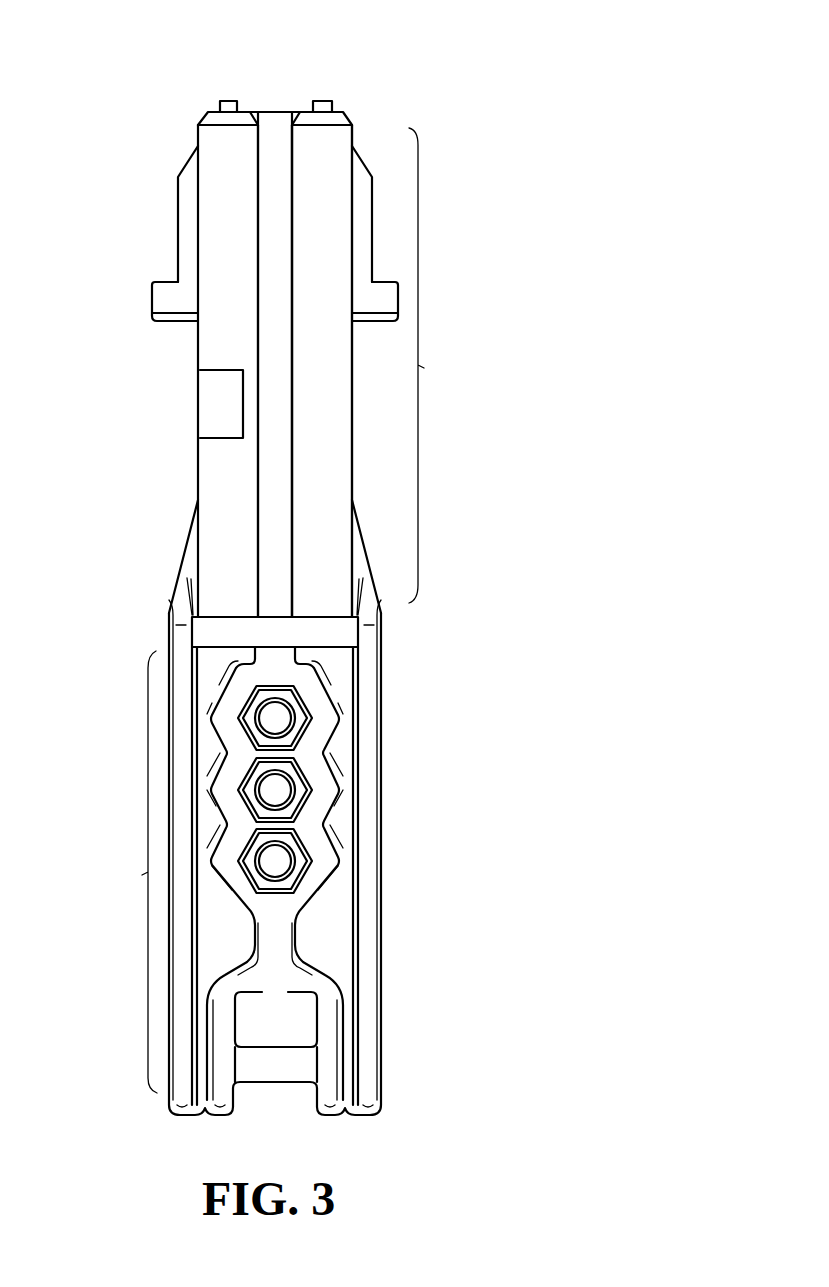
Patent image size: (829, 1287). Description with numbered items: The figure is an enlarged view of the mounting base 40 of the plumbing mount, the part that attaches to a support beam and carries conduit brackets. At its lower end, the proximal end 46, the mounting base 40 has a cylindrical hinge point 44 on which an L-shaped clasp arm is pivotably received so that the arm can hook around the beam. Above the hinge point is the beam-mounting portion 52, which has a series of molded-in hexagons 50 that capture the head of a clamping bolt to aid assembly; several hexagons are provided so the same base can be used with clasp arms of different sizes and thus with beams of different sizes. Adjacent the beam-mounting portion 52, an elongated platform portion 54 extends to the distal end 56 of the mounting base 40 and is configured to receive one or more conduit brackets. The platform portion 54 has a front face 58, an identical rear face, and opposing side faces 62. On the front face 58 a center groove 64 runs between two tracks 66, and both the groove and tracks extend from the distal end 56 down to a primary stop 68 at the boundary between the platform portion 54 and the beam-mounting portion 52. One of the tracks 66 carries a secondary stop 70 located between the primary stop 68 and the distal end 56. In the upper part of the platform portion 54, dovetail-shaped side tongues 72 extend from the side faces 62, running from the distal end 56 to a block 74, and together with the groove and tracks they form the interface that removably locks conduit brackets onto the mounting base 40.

The mounting base 40 is at (381, 660).
The cylindrical hinge point 44 is at (273, 1087).
The proximal end 46 is at (381, 1043).
The molded-in hexagon 50 is at (330, 733).
The beam-mounting portion 52 is at (126, 872).
The platform portion 54 is at (434, 365).
The distal end 56 is at (260, 110).
The front face 58 is at (320, 197).
The side faces 62 is at (170, 403).
The center groove 64 is at (275, 150).
The tracks 66 is at (230, 158).
The primary stop 68 is at (222, 615).
The secondary stop 70 is at (220, 438).
The side tongues 72 is at (177, 210).
The block 74 is at (153, 300).